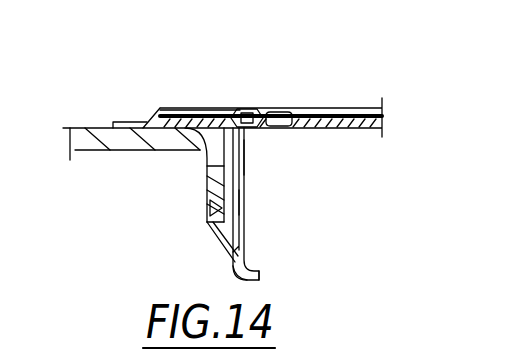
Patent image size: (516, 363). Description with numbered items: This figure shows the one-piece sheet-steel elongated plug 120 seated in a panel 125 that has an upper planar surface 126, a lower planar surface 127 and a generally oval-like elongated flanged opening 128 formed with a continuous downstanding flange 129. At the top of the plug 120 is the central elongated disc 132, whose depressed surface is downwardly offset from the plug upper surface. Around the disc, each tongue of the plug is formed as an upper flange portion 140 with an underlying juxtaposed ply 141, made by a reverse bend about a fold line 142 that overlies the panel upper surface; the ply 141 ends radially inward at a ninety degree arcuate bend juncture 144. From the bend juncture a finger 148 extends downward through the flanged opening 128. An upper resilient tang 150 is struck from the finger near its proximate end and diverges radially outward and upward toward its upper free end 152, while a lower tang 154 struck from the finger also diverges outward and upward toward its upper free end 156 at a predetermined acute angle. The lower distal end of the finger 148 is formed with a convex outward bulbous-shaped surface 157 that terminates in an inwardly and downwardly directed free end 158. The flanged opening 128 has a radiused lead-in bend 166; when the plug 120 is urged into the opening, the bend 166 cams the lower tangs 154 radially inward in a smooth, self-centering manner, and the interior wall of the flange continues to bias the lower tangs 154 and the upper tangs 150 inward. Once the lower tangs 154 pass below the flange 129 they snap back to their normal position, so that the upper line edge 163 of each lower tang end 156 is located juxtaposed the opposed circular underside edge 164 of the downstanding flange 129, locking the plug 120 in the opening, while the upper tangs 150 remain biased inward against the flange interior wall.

The elongated plug 120 is at (355, 134).
The panel 125 is at (70, 127).
The upper planar surface 126 is at (88, 128).
The lower planar surface 127 is at (112, 150).
The elongated flanged opening 128 is at (221, 210).
The downstanding flange 129 is at (206, 180).
The central elongated disc 132 is at (357, 108).
The upper flange portion 140 is at (208, 108).
The ply 141 is at (205, 130).
The fold line 142 is at (140, 127).
The bend juncture 144 is at (240, 106).
The finger 148 is at (246, 250).
The upper resilient tang 150 is at (244, 163).
The upper free end 152 is at (279, 107).
The lower tang 154 is at (238, 238).
The upper free end 156 is at (215, 235).
The bulbous-shaped surface 157 is at (234, 268).
The free end 158 is at (260, 278).
The inner line edge 163 is at (240, 210).
The underside edge 164 is at (210, 226).
The radiused lead-in bend 166 is at (235, 107).